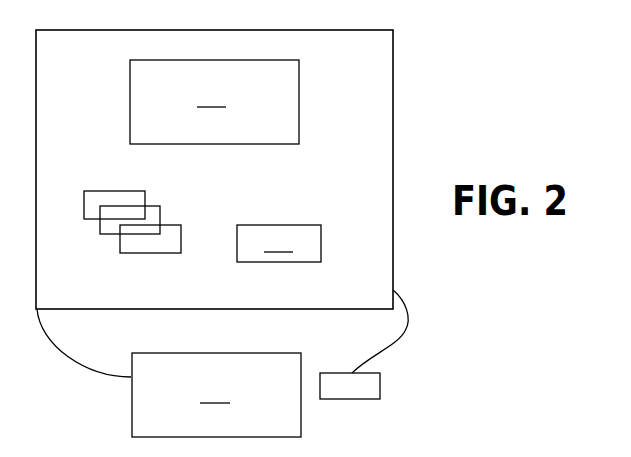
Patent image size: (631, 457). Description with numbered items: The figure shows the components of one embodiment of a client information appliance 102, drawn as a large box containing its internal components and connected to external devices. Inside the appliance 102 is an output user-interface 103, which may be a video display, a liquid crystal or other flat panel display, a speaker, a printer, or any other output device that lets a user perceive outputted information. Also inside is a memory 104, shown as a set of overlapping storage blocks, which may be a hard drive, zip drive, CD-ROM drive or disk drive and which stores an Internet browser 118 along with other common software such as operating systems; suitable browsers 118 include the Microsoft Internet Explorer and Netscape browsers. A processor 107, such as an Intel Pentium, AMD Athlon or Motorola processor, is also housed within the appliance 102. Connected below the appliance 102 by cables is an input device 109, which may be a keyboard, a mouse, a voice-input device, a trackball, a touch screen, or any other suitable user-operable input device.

The client information appliance 102 is at (394, 66).
The output user-interface 103 is at (214, 102).
The memory 104 is at (116, 191).
The processor 107 is at (279, 243).
The input device 109 is at (216, 395).
The browser 118 is at (154, 241).